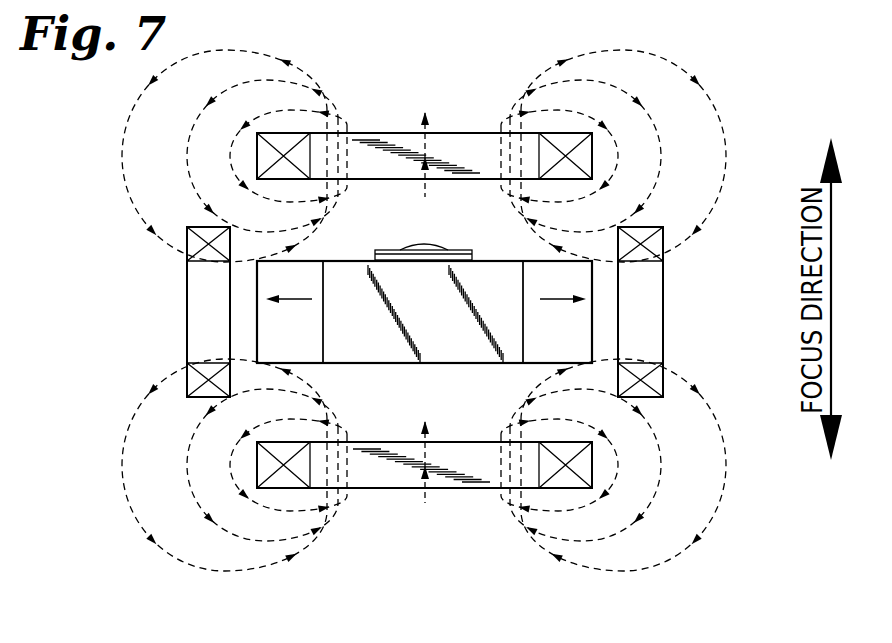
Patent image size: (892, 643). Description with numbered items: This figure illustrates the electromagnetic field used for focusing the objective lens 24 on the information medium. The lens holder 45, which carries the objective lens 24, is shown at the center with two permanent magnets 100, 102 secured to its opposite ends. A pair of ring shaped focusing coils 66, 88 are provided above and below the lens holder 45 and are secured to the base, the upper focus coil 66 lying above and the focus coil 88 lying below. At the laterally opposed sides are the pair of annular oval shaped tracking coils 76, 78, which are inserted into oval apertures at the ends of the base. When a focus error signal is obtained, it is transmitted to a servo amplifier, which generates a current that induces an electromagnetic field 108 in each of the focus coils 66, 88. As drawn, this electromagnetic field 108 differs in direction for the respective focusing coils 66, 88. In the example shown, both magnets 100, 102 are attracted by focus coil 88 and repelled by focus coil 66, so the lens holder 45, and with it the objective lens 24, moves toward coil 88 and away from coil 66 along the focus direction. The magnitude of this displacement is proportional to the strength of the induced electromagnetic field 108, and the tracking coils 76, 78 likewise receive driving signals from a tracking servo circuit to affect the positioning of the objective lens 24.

The objective lens 24 is at (455, 250).
The lens holder 45 is at (435, 318).
The upper focus coil 66 is at (444, 132).
The tracking coil 76 is at (185, 298).
The tracking coil 78 is at (665, 298).
The focus coil 88 is at (374, 491).
The permanent magnet 100 is at (312, 342).
The permanent magnet 102 is at (578, 342).
The electromagnetic field 108 is at (290, 52).